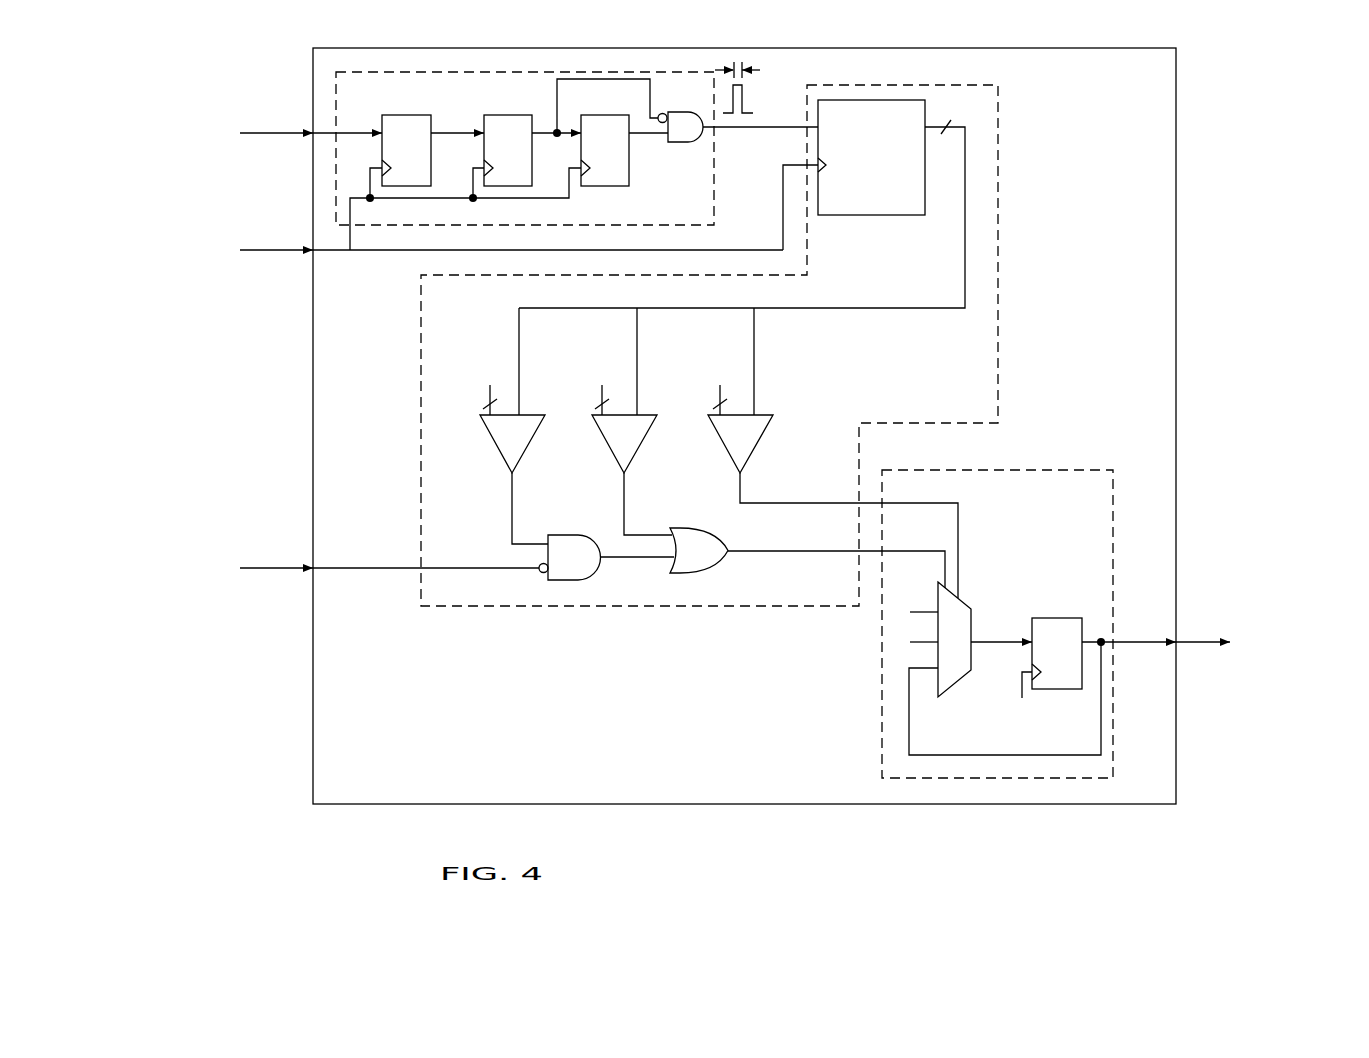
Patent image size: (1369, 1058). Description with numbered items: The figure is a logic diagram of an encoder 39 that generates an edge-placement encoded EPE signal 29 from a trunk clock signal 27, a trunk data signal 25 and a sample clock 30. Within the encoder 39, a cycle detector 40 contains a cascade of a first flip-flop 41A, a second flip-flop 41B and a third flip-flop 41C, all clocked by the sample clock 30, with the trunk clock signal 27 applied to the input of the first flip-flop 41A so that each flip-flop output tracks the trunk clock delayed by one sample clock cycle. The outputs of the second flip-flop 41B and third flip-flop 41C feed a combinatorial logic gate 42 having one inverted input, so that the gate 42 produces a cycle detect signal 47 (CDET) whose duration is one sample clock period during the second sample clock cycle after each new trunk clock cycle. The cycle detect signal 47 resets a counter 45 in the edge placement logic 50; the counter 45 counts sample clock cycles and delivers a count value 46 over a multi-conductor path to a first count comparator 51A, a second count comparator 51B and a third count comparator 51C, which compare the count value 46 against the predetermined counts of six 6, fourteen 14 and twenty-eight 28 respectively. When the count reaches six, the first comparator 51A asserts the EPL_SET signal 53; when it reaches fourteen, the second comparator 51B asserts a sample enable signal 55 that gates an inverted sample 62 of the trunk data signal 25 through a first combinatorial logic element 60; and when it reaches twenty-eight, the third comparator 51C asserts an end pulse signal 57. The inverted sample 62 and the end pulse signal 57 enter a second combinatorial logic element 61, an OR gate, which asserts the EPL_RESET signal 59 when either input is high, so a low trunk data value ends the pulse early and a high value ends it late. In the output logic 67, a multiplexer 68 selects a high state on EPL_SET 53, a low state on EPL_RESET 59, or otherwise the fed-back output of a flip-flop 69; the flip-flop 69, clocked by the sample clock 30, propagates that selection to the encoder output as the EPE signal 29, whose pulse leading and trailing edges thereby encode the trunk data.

The encoder 39 is at (543, 771).
The trunk clock signal 27 is at (273, 140).
The sample clock 30 is at (484, 240).
The trunk data signal 25 is at (348, 573).
The cycle detector 40 is at (369, 103).
The first flip-flop 41A is at (385, 115).
The second flip-flop 41B is at (487, 115).
The third flip-flop 41C is at (588, 115).
The combinatorial logic gate 42 is at (696, 135).
The cycle detect signal 47 is at (741, 128).
The counter 45 is at (885, 196).
The count value 46 is at (742, 267).
The edge placement logic 50 is at (915, 411).
The predetermined count of fourteen 14 is at (490, 387).
The predetermined count of twenty-eight 28 is at (602, 387).
The predetermined count of six 6 is at (720, 387).
The first count comparator 51A is at (757, 447).
The second count comparator 51B is at (529, 447).
The third count comparator 51C is at (641, 447).
The sample enable signal 55 is at (488, 511).
The end pulse signal 57 is at (679, 504).
The EPL_SET signal 53 is at (849, 535).
The first combinatorial logic element 60 is at (584, 567).
The inverted sample 62 is at (630, 558).
The second combinatorial logic element 61 is at (712, 559).
The EPL_RESET signal 59 is at (830, 548).
The output logic 67 is at (1067, 540).
The multiplexer 68 is at (964, 650).
The flip-flop 69 is at (1038, 618).
The EPE signal 29 is at (1207, 637).